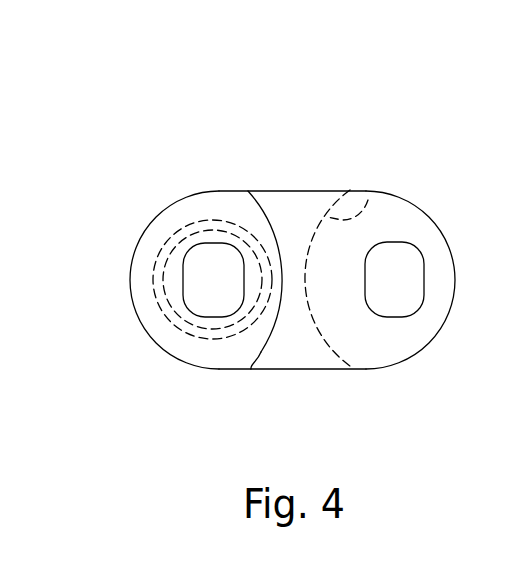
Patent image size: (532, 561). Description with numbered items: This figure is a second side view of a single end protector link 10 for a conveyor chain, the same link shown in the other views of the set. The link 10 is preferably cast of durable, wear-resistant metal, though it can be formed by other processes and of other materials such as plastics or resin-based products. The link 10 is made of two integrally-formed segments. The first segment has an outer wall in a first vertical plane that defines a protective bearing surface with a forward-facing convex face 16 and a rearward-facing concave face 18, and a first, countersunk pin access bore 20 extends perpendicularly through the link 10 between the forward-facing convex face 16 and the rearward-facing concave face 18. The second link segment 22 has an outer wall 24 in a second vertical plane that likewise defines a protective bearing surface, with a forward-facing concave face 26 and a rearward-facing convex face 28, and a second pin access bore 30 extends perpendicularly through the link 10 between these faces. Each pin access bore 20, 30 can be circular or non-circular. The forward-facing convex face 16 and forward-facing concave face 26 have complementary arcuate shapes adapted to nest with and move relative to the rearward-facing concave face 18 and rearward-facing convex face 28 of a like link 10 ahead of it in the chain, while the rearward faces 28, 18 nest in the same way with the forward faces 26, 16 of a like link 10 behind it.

The end protector link 10 is at (279, 225).
The forward-facing convex face 16 is at (132, 288).
The rearward-facing concave face 18 is at (368, 200).
The first pin access bore 20 is at (164, 257).
The second link segment 22 is at (387, 347).
The outer wall 24 is at (186, 208).
The forward-facing concave face 26 is at (264, 350).
The rearward-facing convex face 28 is at (455, 287).
The second pin access bore 30 is at (381, 246).